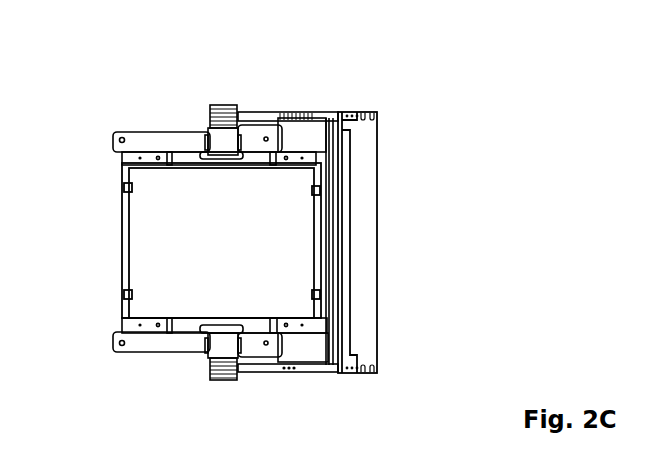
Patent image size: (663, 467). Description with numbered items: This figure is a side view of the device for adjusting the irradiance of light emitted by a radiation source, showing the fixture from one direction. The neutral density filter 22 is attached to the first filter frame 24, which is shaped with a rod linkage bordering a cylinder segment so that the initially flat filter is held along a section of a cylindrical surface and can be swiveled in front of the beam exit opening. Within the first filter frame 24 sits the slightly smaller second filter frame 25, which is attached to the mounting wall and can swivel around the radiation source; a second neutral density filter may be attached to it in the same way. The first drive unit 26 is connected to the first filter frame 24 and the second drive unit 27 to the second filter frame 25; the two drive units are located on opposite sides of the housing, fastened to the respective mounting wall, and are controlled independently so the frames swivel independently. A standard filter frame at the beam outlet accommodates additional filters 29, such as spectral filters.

The neutral density filter 22 is at (368, 217).
The first filter frame 24 is at (318, 111).
The second filter frame 25 is at (290, 112).
The first drive unit 26 is at (193, 345).
The second drive unit 27 is at (250, 142).
The additional filters 29 is at (168, 247).